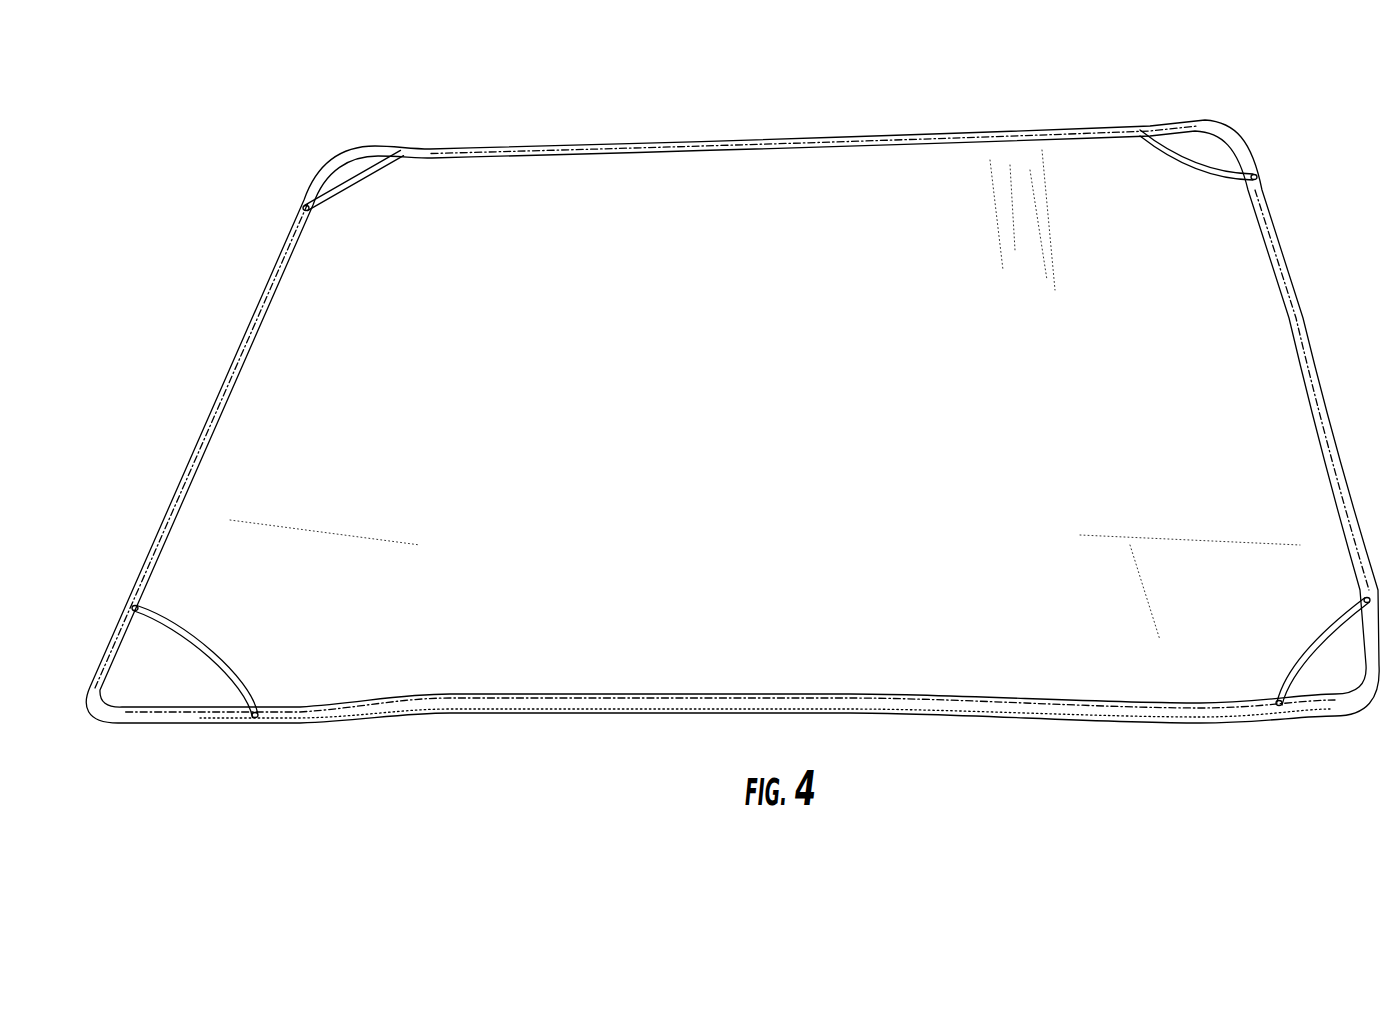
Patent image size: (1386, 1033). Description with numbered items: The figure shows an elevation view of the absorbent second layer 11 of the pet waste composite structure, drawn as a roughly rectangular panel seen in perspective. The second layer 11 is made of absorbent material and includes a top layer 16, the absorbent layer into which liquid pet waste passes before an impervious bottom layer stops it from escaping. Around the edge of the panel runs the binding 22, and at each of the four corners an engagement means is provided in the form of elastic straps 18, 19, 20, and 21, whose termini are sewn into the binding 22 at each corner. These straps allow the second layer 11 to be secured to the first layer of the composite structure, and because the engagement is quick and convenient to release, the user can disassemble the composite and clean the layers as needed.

The second layer 11 is at (1000, 137).
The top layer 16 is at (1067, 172).
The elastic strap 18 is at (1187, 158).
The elastic strap 19 is at (338, 188).
The elastic strap 20 is at (222, 662).
The elastic strap 21 is at (1302, 664).
The binding 22 is at (306, 205).